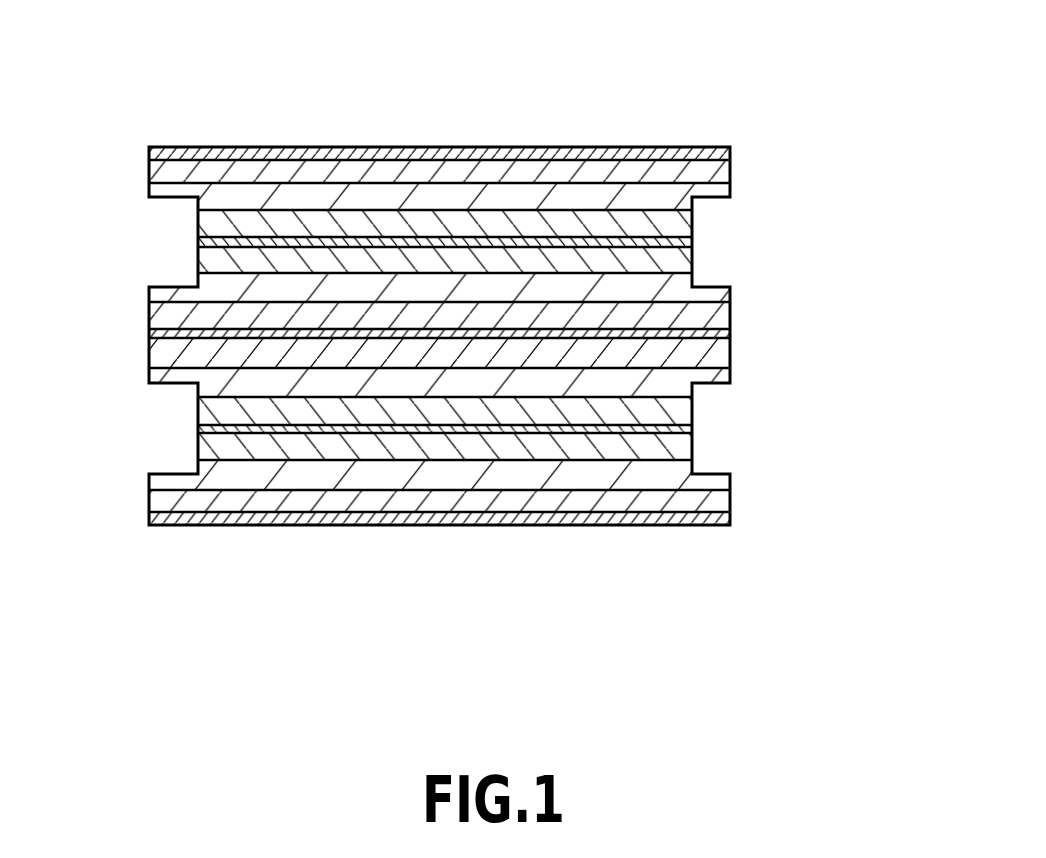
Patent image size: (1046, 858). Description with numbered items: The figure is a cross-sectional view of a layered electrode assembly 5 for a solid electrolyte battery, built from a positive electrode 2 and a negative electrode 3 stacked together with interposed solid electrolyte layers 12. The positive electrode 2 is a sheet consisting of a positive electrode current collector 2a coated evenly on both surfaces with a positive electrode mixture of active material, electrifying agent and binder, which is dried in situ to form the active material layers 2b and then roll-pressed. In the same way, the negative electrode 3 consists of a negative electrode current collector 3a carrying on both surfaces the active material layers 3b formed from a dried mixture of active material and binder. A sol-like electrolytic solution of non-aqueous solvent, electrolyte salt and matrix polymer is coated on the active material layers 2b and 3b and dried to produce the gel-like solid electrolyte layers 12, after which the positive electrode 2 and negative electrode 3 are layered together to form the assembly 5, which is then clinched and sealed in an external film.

The layered electrode assembly 5 is at (732, 105).
The solid electrolyte layers 12 is at (148, 293).
The positive electrode 2 is at (840, 177).
The positive electrode current collector 2a is at (693, 238).
The active material layers for the positive electrode 2b is at (693, 222).
The negative electrode 3 is at (840, 305).
The negative electrode current collector 3a is at (722, 335).
The active material layers for the negative electrode 3b is at (720, 313).